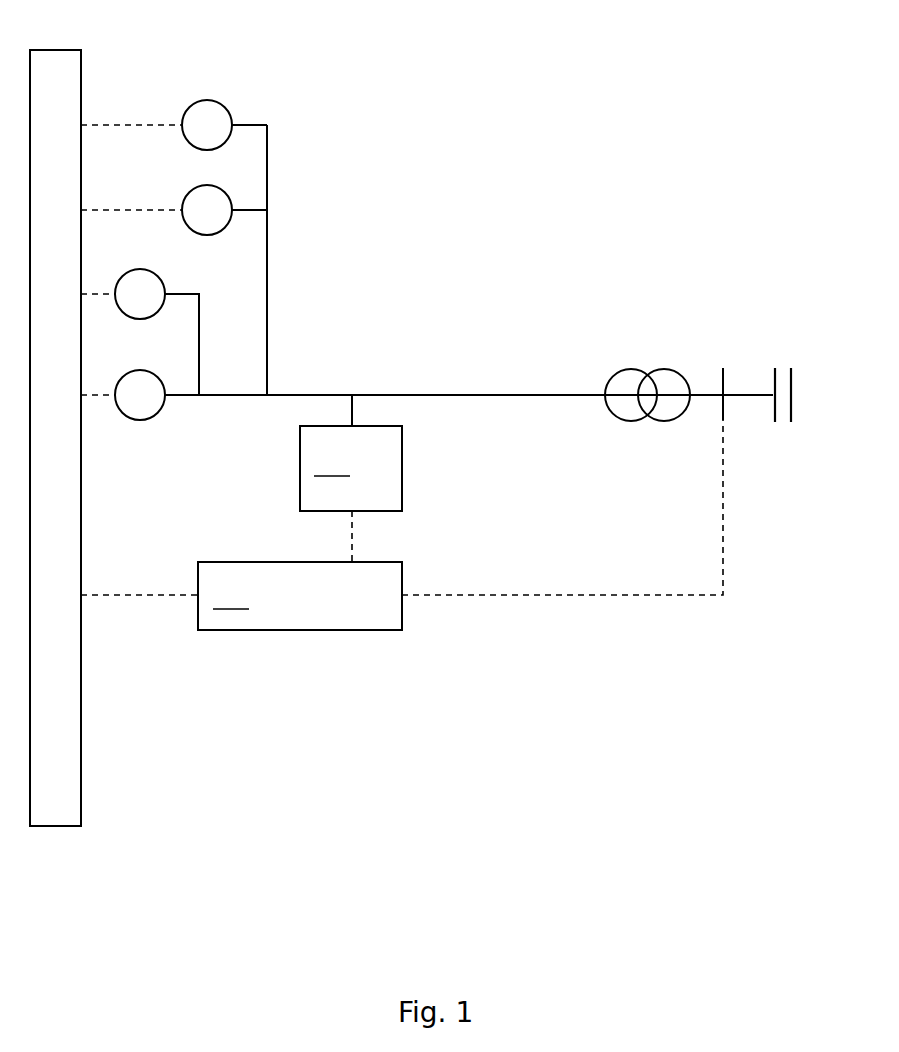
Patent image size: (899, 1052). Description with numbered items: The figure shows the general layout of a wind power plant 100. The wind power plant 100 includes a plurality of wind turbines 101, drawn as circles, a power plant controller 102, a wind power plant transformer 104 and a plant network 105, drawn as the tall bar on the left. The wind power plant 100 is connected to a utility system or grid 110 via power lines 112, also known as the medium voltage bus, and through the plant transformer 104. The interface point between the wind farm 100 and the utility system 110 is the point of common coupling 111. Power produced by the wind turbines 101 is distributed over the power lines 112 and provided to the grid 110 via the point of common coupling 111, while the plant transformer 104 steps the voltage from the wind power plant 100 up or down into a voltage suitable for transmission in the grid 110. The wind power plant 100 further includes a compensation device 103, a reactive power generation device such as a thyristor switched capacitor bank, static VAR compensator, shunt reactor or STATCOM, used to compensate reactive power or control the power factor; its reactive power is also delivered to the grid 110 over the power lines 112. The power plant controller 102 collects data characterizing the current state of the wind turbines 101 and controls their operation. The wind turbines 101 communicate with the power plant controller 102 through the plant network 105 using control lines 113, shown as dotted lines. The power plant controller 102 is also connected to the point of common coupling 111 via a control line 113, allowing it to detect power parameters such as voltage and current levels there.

The wind power plant 100 is at (573, 115).
The wind turbines 101 is at (215, 186).
The power plant controller 102 is at (300, 596).
The compensation device 103 is at (351, 453).
The wind power plant transformer 104 is at (627, 368).
The plant network 105 is at (47, 50).
The utility system or grid 110 is at (778, 363).
The point of common coupling 111 is at (723, 387).
The power lines 112 is at (412, 393).
The control lines 113 is at (115, 123).